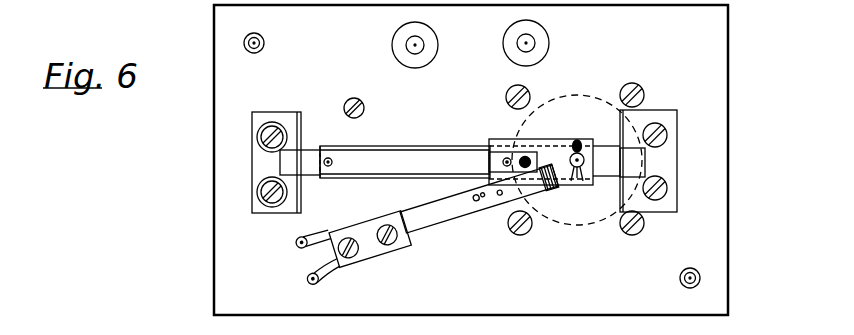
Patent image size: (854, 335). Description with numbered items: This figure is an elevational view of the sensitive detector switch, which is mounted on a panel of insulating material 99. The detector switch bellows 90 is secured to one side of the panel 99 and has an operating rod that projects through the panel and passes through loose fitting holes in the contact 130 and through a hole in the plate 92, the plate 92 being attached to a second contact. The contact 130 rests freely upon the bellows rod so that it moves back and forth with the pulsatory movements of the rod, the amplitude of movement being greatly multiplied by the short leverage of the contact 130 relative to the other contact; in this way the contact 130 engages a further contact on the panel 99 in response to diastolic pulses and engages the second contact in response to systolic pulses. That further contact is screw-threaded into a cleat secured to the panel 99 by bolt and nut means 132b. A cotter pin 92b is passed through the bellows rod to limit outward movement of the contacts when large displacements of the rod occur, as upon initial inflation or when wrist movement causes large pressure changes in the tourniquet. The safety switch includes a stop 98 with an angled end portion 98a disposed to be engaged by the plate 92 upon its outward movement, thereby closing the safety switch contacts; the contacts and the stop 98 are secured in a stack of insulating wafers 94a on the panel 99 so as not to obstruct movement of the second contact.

The detector switch bellows 90 is at (600, 94).
The plate 92 is at (545, 142).
The cotter pin 92b is at (577, 182).
The stack of insulating wafers 94a is at (364, 258).
The stop 98 is at (449, 216).
The angled end portion 98a is at (554, 188).
The panel of insulating material 99 is at (716, 63).
The contact 130 is at (400, 147).
The bolt and nut means 132b is at (364, 110).